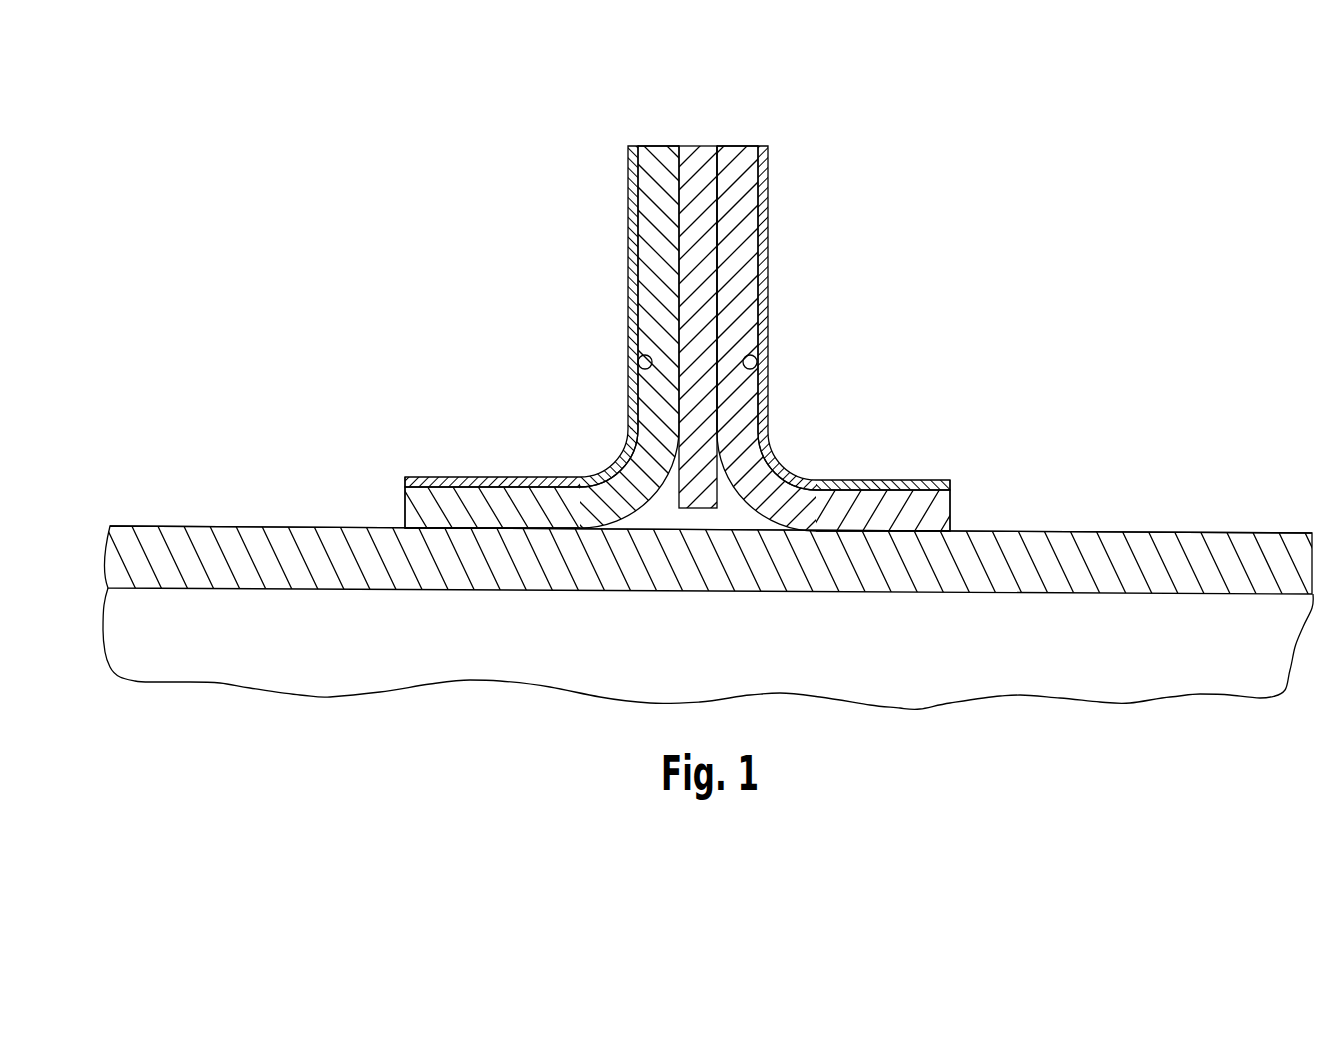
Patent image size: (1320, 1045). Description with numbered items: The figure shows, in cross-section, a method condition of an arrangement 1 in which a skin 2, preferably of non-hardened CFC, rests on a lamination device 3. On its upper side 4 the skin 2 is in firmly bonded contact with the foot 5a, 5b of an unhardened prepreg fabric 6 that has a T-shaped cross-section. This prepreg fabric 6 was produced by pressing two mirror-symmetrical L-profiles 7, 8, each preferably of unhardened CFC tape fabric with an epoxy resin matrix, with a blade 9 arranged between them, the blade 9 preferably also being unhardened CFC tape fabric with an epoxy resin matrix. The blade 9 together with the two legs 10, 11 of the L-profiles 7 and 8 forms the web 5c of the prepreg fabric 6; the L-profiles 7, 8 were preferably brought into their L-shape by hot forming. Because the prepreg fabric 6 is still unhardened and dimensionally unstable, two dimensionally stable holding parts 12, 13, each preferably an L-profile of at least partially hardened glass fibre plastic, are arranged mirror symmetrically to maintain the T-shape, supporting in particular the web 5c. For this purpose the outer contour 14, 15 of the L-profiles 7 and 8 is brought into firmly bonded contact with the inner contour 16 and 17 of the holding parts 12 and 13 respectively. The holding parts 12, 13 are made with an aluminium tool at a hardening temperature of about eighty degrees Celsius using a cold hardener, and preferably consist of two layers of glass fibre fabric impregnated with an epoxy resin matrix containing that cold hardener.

The arrangement 1 is at (263, 177).
The skin 2 is at (1170, 537).
The lamination device 3 is at (689, 660).
The upper side 4 is at (1083, 532).
The foot 5a is at (428, 509).
The foot 5b is at (930, 510).
The web 5c is at (740, 228).
The unhardened prepreg fabric 6 is at (673, 100).
The L-profile 7 is at (762, 122).
The L-profile 8 is at (637, 123).
The blade 9 is at (700, 147).
The leg 10 is at (648, 168).
The leg 11 is at (752, 172).
The holding part 12 is at (640, 314).
The holding part 13 is at (767, 311).
The outer contour 14 is at (635, 258).
The outer contour 15 is at (760, 254).
The inner contour 16 is at (650, 372).
The inner contour 17 is at (753, 368).